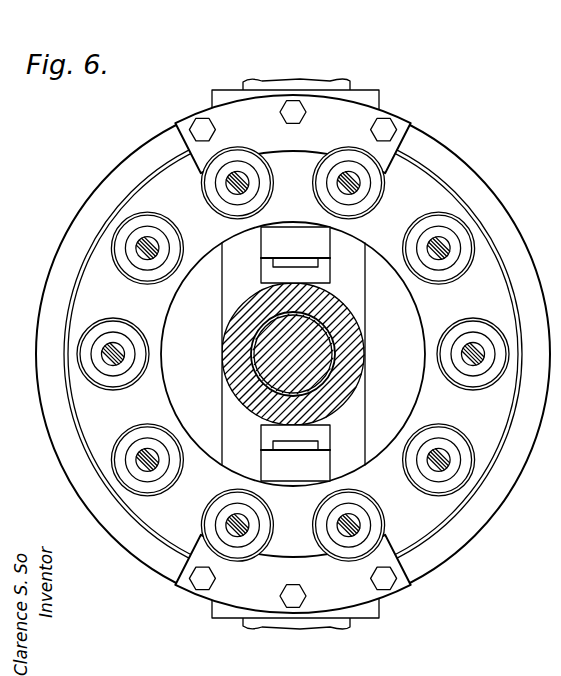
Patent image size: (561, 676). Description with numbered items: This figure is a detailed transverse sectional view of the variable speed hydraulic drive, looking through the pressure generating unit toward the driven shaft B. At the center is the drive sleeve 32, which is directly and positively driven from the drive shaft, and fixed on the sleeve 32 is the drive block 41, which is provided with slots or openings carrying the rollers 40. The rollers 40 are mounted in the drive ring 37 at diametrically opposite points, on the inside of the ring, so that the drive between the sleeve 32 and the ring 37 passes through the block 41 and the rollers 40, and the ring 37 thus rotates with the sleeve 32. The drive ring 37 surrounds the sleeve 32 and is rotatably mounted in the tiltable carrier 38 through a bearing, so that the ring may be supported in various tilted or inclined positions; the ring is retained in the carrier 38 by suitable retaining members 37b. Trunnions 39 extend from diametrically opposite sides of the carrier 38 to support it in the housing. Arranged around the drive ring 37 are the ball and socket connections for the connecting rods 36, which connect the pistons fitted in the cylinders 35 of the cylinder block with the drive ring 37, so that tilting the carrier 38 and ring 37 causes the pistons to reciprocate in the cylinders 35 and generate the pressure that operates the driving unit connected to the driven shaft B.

The drive sleeve 32 is at (353, 378).
The cylinders 35 is at (90, 283).
The connecting rods 36 is at (349, 184).
The drive ring 37 is at (293, 368).
The retaining members 37b is at (292, 354).
The carrier 38 is at (63, 470).
The trunnions 39 is at (340, 85).
The rollers 40 is at (295, 354).
The drive block 41 is at (349, 285).
The driven shaft B is at (342, 335).